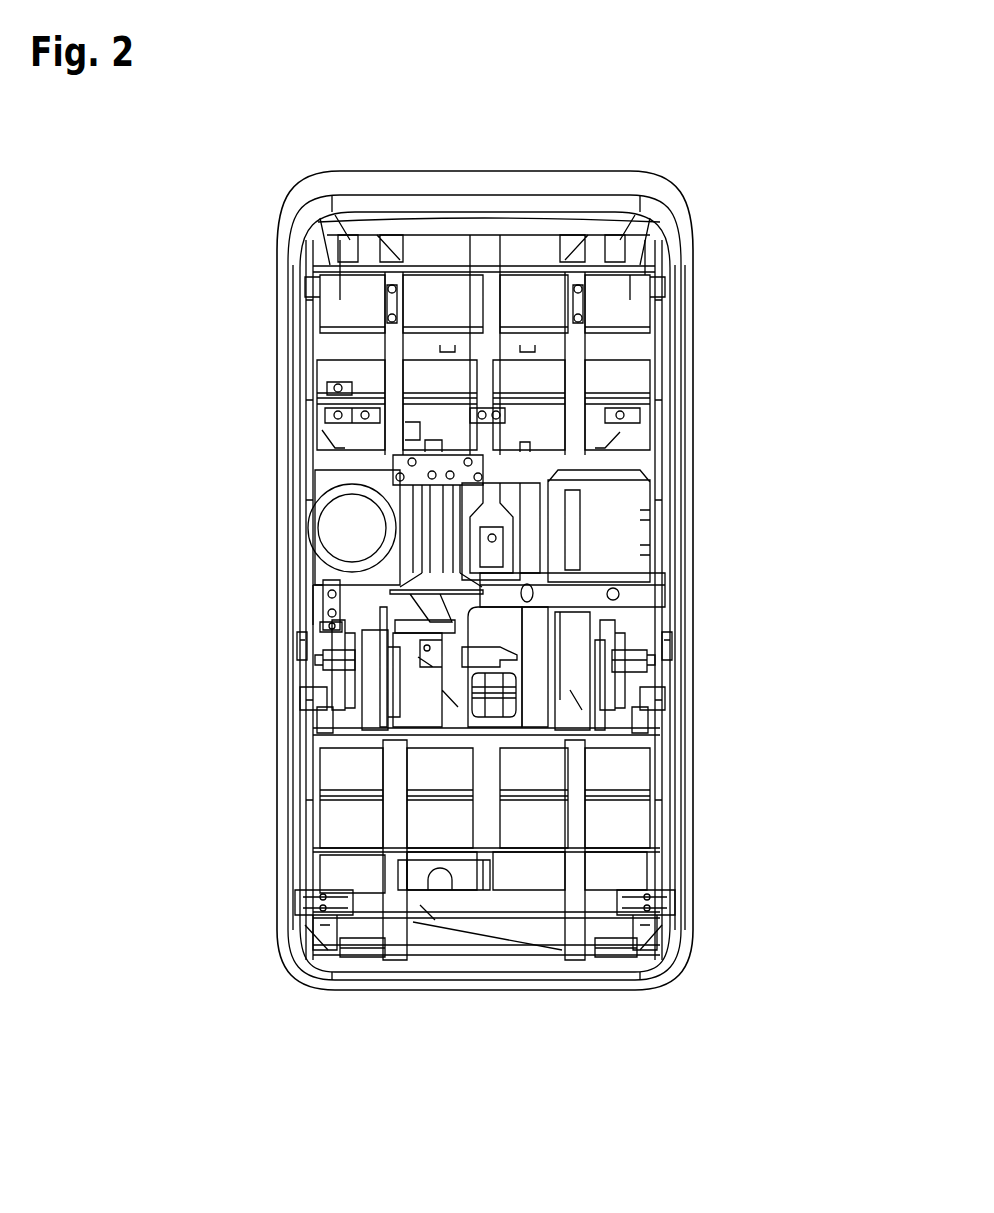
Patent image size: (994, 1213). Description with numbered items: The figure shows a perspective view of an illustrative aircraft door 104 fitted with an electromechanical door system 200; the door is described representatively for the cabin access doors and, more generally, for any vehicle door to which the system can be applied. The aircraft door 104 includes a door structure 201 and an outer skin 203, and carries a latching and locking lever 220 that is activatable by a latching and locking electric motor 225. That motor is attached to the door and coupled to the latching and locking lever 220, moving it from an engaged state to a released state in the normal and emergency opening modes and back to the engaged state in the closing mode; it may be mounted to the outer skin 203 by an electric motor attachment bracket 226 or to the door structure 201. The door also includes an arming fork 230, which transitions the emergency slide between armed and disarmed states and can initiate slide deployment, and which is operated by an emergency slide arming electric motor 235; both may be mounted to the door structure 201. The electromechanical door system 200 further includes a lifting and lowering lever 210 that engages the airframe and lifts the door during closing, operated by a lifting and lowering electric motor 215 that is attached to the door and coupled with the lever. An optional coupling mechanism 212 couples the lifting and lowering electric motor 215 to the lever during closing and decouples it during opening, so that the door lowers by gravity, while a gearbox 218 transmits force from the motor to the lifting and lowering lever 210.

The aircraft door 104 is at (740, 145).
The electromechanical door system 200 is at (160, 605).
The door structure 201 is at (425, 288).
The outer skin 203 is at (613, 522).
The lifting and lowering lever 210 is at (315, 592).
The coupling mechanism 212 is at (413, 627).
The lifting and lowering electric motor 215 is at (318, 628).
The gearbox 218 is at (380, 596).
The latching and locking lever 220 is at (300, 640).
The latching and locking electric motor 225 is at (340, 667).
The electric motor attachment bracket 226 is at (348, 697).
The arming fork 230 is at (340, 955).
The emergency slide arming electric motor 235 is at (362, 953).